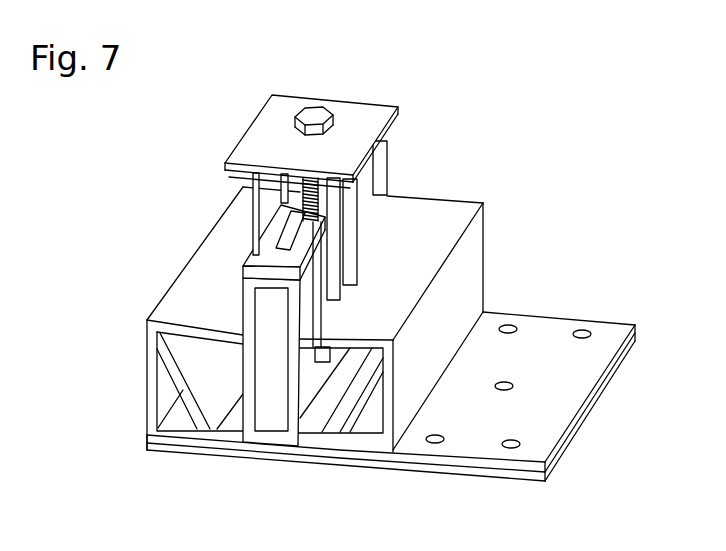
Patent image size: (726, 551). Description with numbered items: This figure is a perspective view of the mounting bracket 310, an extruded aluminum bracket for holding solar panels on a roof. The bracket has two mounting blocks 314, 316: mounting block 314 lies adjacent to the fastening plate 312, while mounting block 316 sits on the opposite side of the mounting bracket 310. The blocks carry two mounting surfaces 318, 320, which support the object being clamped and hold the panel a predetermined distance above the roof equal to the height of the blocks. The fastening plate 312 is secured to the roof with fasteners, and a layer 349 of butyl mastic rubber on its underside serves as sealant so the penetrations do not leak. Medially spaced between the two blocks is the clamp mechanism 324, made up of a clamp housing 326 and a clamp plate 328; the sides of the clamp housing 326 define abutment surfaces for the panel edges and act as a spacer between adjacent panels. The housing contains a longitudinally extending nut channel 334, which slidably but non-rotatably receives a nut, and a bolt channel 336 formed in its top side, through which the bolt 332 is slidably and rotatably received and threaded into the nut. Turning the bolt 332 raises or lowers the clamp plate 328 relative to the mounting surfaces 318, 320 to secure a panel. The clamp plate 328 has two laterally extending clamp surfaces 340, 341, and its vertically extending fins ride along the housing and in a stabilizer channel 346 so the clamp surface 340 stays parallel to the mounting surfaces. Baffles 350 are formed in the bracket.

The mounting bracket 310 is at (183, 142).
The fastening plate 312 is at (610, 393).
The mounting block 314 is at (468, 263).
The mounting block 316 is at (143, 352).
The mounting surface 318 is at (443, 217).
The mounting surface 320 is at (180, 290).
The clamp mechanism 324 is at (379, 76).
The clamp housing 326 is at (387, 152).
The clamp plate 328 is at (240, 140).
The bolt 332 is at (313, 114).
The nut channel 334 is at (253, 267).
The bolt channel 336 is at (272, 372).
The clamp surface 340 is at (397, 116).
The clamp surface 341 is at (222, 175).
The stabilizer channel 346 is at (324, 300).
The layer of butyl mastic rubber 349 is at (530, 485).
The baffle 350 is at (175, 385).